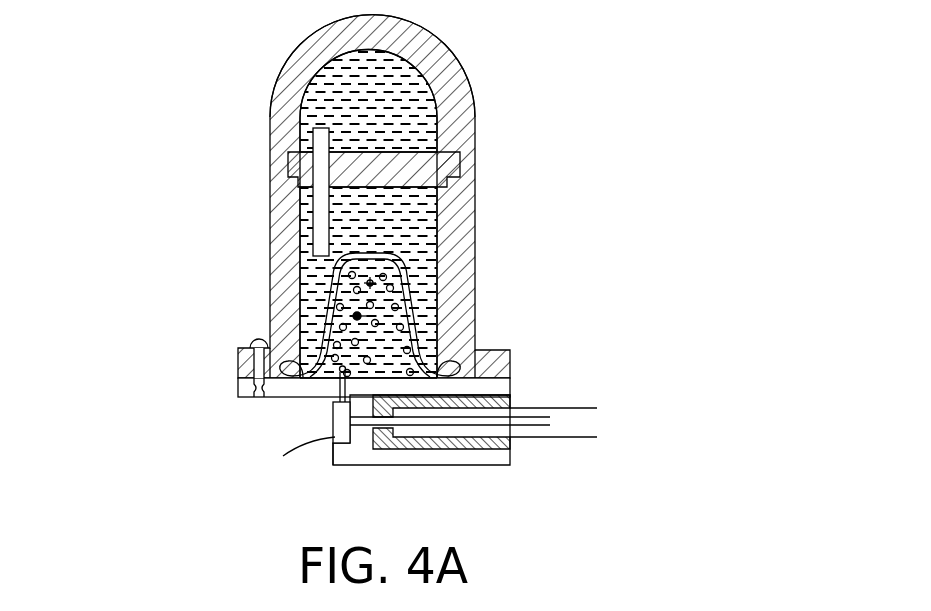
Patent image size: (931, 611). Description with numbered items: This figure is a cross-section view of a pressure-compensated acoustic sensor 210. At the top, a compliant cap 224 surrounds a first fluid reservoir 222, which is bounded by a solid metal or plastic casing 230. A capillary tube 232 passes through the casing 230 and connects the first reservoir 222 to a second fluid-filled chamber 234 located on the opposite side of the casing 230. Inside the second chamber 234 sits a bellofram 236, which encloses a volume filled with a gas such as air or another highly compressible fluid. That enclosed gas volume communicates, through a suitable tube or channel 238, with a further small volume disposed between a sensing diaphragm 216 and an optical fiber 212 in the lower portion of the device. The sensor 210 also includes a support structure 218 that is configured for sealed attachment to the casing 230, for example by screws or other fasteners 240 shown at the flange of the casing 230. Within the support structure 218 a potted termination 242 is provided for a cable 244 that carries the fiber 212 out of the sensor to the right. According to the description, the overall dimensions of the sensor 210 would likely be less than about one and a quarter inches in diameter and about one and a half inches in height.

The sensor 210 is at (352, 263).
The optical fiber 212 is at (366, 430).
The sensing diaphragm 216 is at (322, 429).
The support structure 218 is at (333, 450).
The first fluid reservoir 222 is at (415, 115).
The compliant cap 224 is at (460, 68).
The casing 230 is at (262, 238).
The capillary tube 232 is at (273, 168).
The second fluid-filled chamber 234 is at (418, 236).
The bellofram 236 is at (420, 333).
The tube or channel 238 is at (340, 394).
The fasteners 240 is at (252, 344).
The potted termination 242 is at (455, 456).
The cable 244 is at (594, 441).